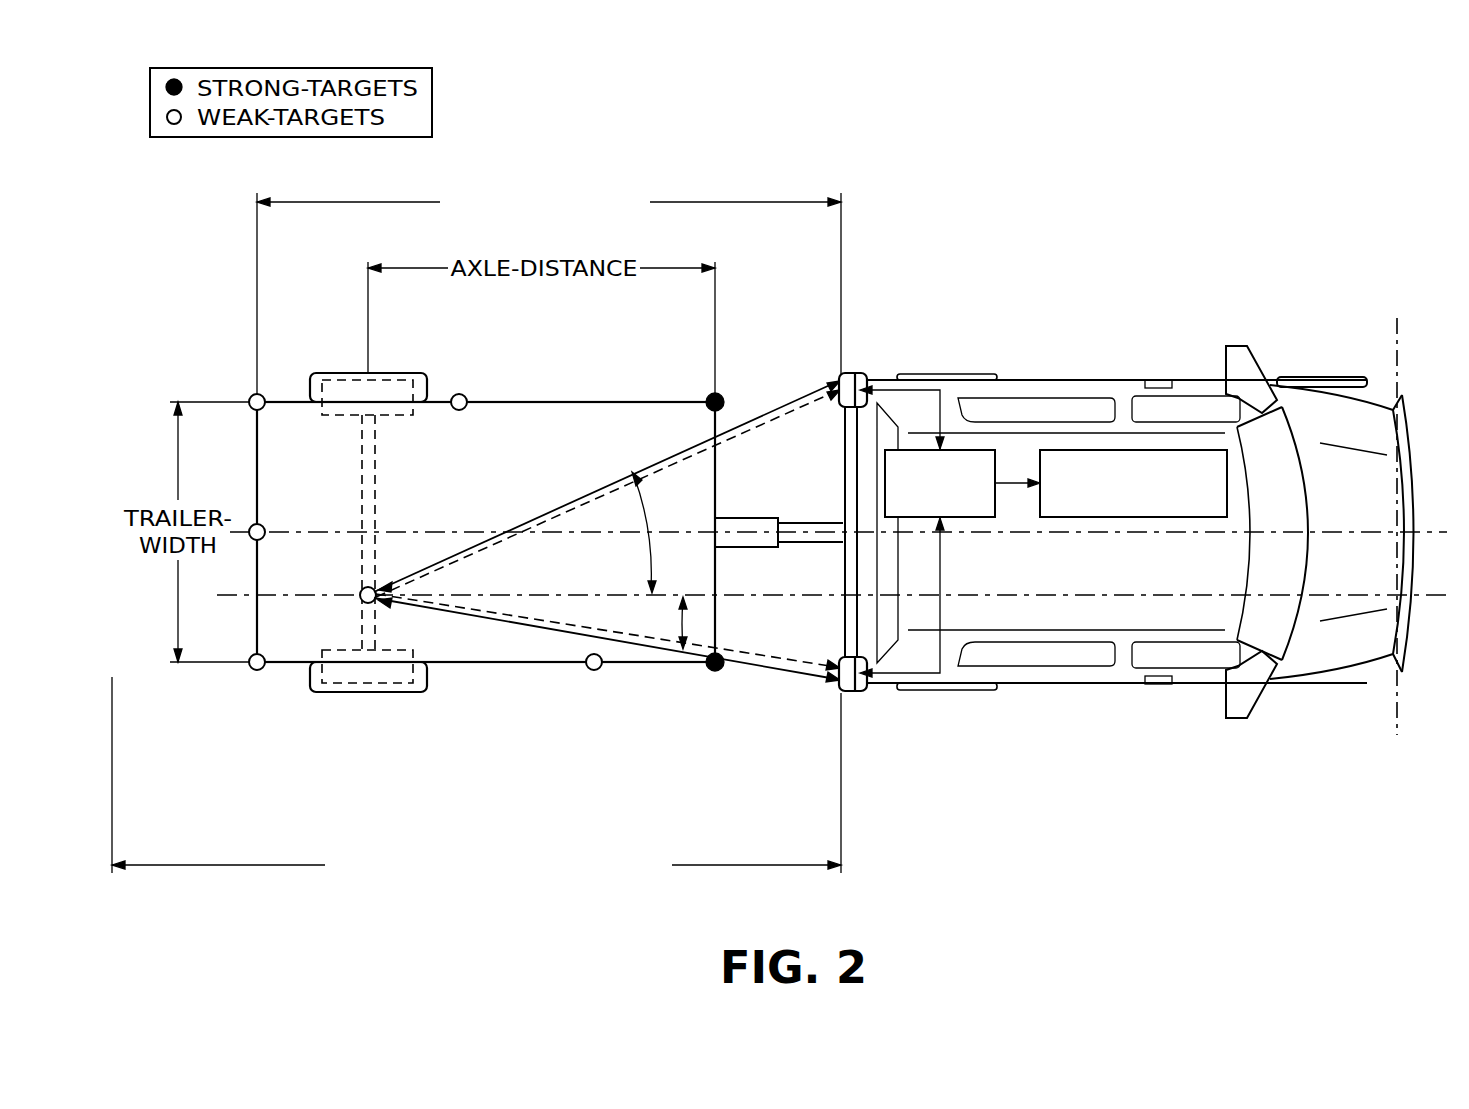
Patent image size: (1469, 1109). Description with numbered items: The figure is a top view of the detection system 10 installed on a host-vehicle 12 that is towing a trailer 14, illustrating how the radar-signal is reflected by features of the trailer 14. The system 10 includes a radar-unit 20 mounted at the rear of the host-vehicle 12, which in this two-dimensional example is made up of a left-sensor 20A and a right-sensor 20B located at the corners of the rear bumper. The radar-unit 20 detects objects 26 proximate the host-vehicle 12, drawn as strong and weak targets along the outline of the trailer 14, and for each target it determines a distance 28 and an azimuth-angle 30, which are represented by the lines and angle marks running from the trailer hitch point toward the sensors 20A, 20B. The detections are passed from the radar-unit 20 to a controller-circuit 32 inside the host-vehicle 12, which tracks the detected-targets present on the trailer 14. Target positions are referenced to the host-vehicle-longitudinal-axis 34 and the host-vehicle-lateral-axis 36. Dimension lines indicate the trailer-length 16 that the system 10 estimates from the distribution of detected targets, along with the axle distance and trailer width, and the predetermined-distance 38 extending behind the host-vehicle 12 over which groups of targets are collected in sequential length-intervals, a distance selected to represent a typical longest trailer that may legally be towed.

The detection system 10 is at (1126, 462).
The host-vehicle 12 is at (1095, 380).
The trailer 14 is at (643, 402).
The trailer-length 16 is at (703, 200).
The radar-unit 20 is at (990, 448).
The left-sensor 20A is at (846, 378).
The right-sensor 20B is at (845, 690).
The objects 26 is at (253, 668).
The distance 28 is at (518, 628).
The azimuth-angle 30 is at (645, 502).
The controller-circuit 32 is at (1147, 517).
The host-vehicle-longitudinal-axis 34 is at (1430, 597).
The host-vehicle-lateral-axis 36 is at (1397, 337).
The predetermined-distance 38 is at (248, 868).